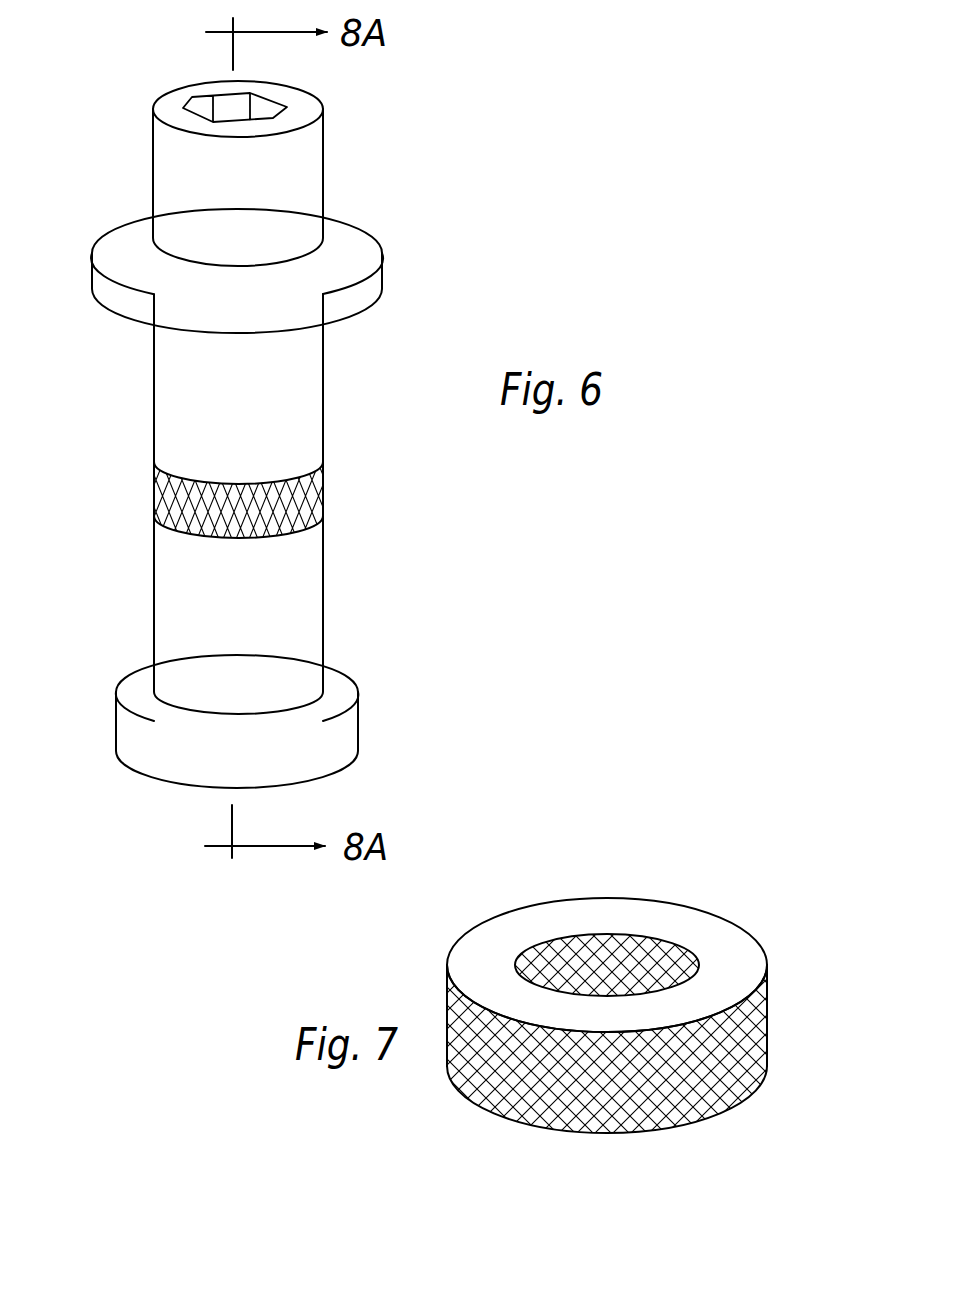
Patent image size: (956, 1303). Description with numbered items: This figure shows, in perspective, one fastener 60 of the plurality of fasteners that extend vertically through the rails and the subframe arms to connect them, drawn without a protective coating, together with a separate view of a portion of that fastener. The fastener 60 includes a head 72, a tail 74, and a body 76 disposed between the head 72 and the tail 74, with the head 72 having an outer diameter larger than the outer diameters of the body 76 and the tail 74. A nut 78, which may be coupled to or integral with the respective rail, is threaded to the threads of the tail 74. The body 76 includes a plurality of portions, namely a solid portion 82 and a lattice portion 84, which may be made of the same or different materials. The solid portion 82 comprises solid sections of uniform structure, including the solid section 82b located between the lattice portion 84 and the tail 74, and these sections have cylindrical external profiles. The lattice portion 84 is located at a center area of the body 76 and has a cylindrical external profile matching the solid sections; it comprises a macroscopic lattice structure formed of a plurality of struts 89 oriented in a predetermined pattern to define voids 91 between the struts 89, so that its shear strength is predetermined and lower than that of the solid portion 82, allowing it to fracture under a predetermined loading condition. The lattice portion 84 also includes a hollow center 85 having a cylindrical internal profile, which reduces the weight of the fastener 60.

In FIG. 6, the fastener 60 is at (408, 495).
In FIG. 6, the head 72 is at (130, 730).
In FIG. 6, the tail 74 is at (228, 277).
In FIG. 6, the body 76 is at (365, 569).
In FIG. 6, the nut 78 is at (330, 183).
In FIG. 6, the solid portion 82 is at (330, 606).
In FIG. 6, the solid section 82b is at (153, 405).
In FIG. 6, the lattice portion 84 is at (202, 505).
In FIG. 7, the lattice portion 84 is at (708, 882).
In FIG. 7, the hollow center 85 is at (630, 957).
In FIG. 7, the struts 89 is at (570, 1102).
In FIG. 7, the voids 91 is at (507, 1098).